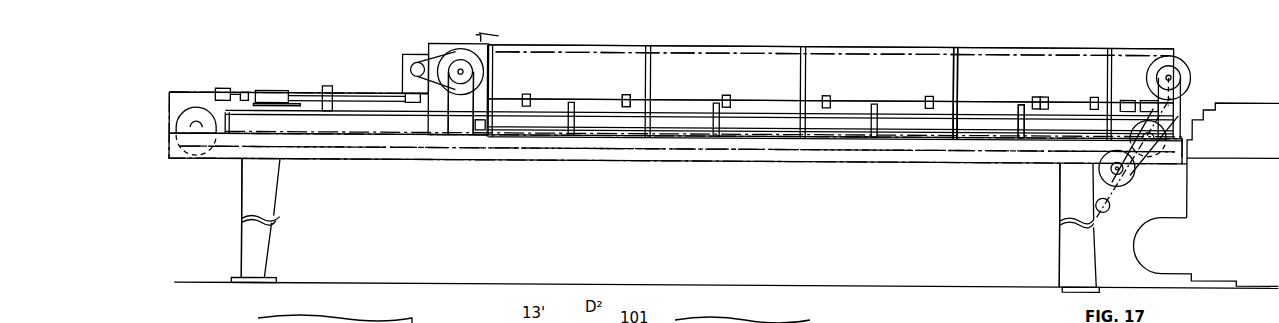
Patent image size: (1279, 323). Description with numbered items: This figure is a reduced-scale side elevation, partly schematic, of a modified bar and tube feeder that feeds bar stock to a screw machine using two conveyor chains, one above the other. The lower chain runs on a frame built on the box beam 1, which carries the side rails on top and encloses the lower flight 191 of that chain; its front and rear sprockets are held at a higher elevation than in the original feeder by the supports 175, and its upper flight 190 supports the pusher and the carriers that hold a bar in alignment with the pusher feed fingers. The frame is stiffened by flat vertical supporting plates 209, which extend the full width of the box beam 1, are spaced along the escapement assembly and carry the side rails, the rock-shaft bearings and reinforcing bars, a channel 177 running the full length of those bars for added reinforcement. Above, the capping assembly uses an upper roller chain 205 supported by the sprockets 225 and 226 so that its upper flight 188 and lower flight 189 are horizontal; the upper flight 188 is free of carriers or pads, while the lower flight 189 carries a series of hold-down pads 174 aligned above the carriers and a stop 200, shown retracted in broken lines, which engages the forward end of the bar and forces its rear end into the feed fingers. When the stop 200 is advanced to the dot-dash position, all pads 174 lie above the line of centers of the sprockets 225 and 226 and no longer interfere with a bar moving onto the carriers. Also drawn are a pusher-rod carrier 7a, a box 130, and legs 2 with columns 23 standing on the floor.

The box beam 1 is at (750, 153).
The supporting leg 2 is at (248, 240).
The carrier 7a is at (325, 85).
The leg column 23 is at (265, 200).
The switch box 130 is at (225, 78).
The hold-down pad 174 is at (535, 95).
The support 175 is at (463, 125).
The channel 177 is at (298, 117).
The upper flight 188 is at (727, 48).
The lower flight 189 is at (960, 100).
The upper flight 190 is at (656, 100).
The lower flight 191 is at (675, 153).
The stop 200 is at (1148, 100).
The roller chain 205 is at (890, 45).
The supporting plate 209 is at (490, 85).
The sprocket 225 is at (1192, 70).
The sprocket 226 is at (486, 64).